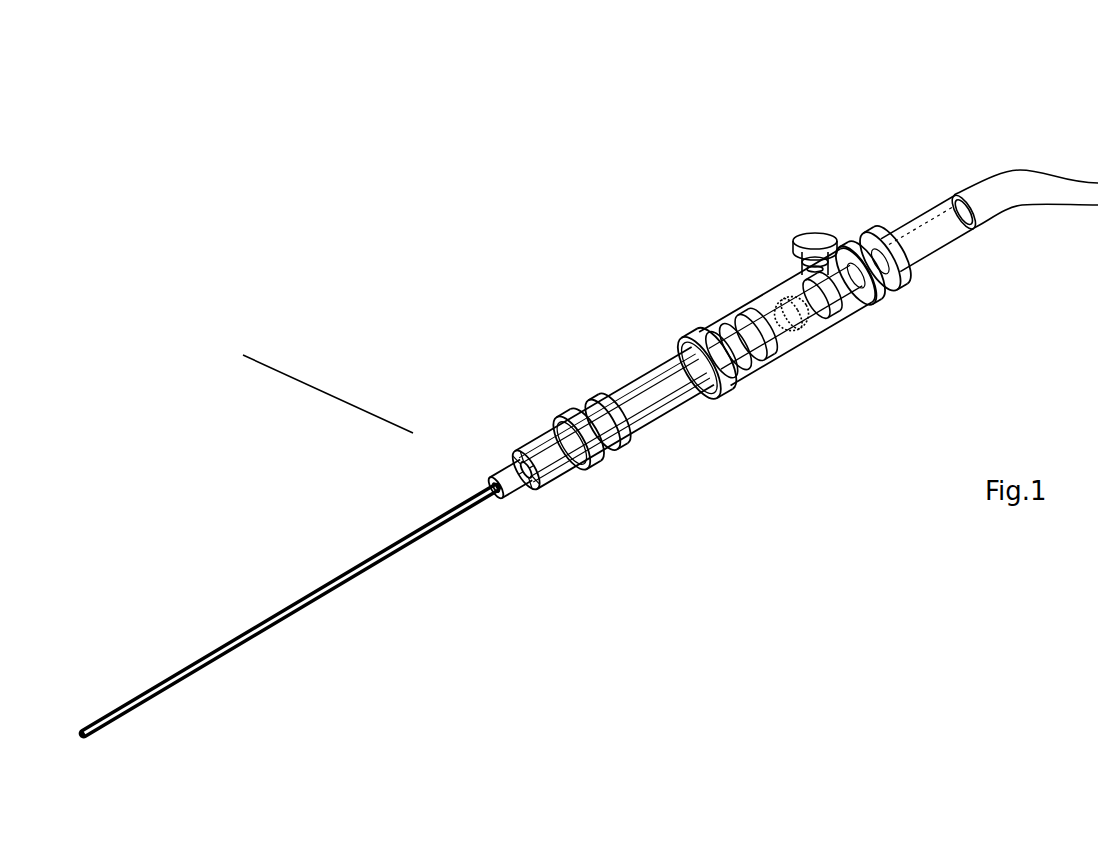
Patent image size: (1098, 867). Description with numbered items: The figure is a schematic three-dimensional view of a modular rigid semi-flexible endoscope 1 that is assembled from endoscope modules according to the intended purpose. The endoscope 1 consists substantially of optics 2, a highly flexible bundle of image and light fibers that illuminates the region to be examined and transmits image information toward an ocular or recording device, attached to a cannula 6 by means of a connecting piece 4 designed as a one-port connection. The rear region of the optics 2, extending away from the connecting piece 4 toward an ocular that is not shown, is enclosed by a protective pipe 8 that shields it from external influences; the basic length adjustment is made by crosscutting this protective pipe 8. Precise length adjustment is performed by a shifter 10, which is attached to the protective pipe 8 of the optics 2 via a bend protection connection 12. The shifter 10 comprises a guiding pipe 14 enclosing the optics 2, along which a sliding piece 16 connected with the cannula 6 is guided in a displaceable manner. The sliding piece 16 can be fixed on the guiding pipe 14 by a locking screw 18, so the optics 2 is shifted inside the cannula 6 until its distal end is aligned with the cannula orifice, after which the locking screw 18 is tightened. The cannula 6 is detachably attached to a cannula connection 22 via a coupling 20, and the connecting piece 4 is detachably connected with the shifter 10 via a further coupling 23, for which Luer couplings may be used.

The endoscope 1 is at (413, 433).
The optics 2 is at (647, 398).
The connecting piece 4 is at (617, 392).
The cannula 6 is at (252, 618).
The protective pipe 8 is at (1008, 187).
The shifter 10 is at (775, 290).
The bend protection connection 12 is at (937, 222).
The guiding pipe 14 is at (850, 255).
The sliding piece 16 is at (778, 377).
The locking screw 18 is at (848, 302).
The coupling 20 is at (556, 495).
The cannula connection 22 is at (563, 480).
The coupling 23 is at (703, 393).